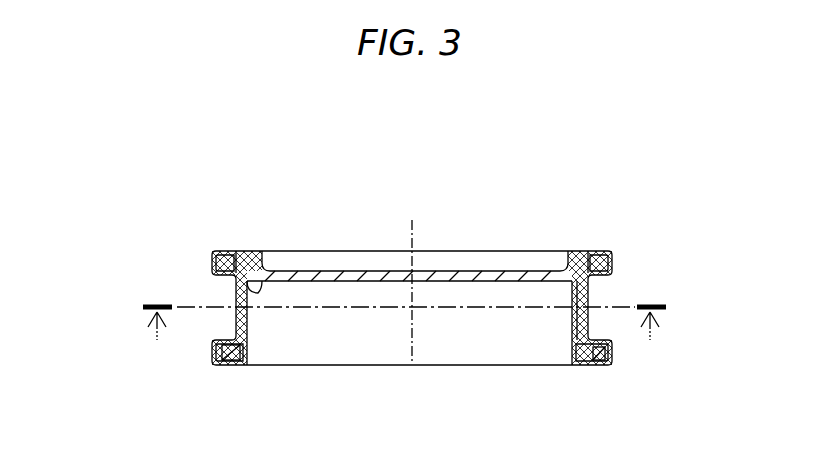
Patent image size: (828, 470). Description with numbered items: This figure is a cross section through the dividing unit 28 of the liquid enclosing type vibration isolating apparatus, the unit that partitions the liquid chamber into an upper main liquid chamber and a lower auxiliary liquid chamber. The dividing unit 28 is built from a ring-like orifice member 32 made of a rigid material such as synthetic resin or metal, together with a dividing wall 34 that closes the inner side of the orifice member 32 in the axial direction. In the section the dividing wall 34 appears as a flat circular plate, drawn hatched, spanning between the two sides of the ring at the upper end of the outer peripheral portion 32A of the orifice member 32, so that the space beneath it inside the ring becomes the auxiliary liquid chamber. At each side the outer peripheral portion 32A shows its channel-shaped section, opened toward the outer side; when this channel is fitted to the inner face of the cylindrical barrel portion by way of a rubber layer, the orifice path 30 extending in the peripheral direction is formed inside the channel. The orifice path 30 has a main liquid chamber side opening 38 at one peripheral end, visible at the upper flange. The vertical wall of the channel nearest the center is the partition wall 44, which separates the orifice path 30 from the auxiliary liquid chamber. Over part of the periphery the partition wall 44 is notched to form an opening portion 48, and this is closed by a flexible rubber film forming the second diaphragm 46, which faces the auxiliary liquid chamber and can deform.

The dividing unit 28 is at (435, 177).
The orifice path 30 is at (228, 295).
The orifice member 32 is at (587, 357).
The outer peripheral portion 32A is at (230, 355).
The dividing wall 34 is at (347, 268).
The main liquid chamber side opening 38 is at (598, 255).
The partition wall 44 is at (577, 320).
The second diaphragm 46 is at (243, 305).
The opening portion 48 is at (252, 265).